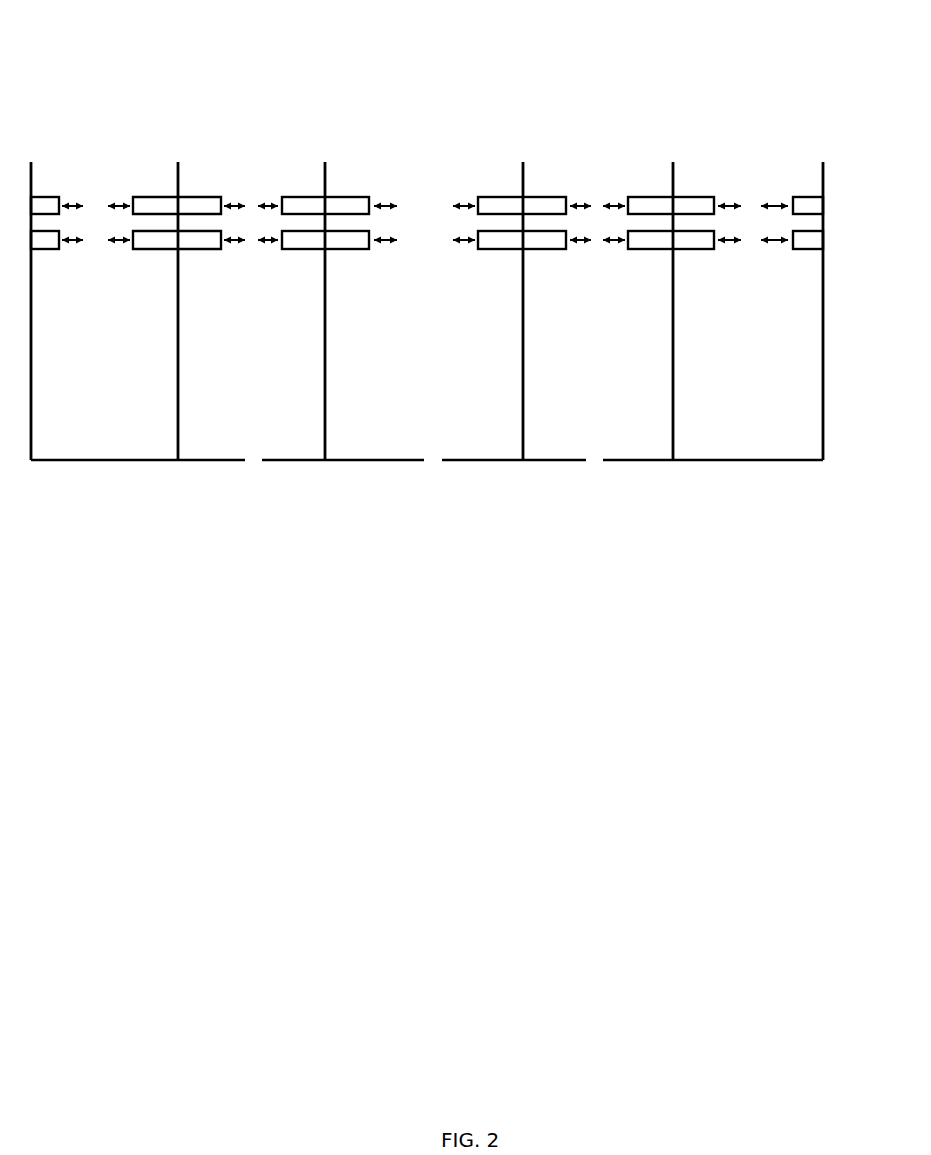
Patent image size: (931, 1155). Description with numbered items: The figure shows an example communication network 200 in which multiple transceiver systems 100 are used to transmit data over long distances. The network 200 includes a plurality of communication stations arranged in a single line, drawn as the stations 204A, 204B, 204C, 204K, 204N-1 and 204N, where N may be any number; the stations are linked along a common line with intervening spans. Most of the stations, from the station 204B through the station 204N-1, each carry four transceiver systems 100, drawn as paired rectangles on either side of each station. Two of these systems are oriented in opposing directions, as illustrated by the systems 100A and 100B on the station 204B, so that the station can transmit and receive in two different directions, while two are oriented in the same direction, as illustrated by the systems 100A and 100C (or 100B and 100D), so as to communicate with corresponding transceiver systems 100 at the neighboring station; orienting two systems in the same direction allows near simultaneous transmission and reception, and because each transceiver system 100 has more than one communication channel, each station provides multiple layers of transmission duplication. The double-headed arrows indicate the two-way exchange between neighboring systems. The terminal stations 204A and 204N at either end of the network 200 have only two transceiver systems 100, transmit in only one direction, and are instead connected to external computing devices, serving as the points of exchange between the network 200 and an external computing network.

The communication network 200 is at (72, 104).
The transceiver system 100 is at (44, 197).
The transceiver system 100A is at (147, 197).
The transceiver system 100B is at (197, 197).
The transceiver system 100C is at (140, 249).
The transceiver system 100D is at (220, 249).
The communication station 204A is at (31, 428).
The communication station 204B is at (178, 428).
The communication station 204C is at (325, 428).
The communication station 204K is at (523, 428).
The communication station 204N-1 is at (673, 428).
The communication station 204N is at (823, 428).